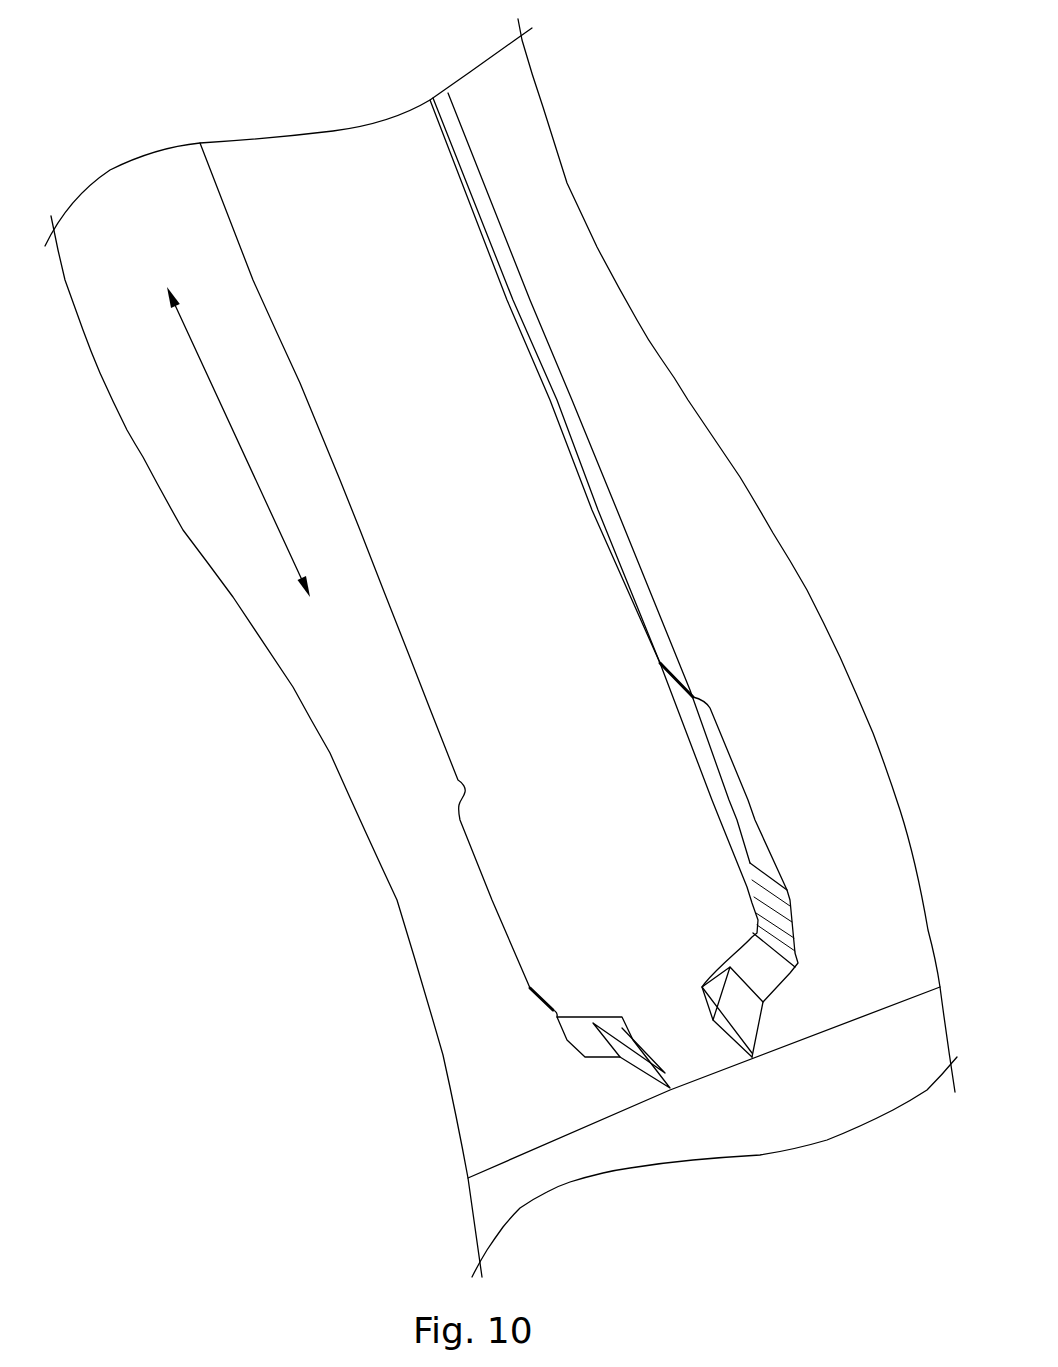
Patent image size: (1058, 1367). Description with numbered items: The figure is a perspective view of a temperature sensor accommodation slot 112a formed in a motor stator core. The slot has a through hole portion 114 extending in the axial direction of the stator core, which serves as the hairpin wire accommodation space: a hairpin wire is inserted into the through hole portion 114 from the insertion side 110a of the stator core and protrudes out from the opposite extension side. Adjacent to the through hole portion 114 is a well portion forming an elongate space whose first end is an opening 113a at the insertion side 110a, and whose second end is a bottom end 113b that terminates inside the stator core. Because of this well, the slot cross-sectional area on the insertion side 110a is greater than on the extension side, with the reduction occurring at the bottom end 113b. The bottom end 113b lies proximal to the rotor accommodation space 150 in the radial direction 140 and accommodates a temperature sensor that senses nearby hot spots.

The insertion side 110a is at (465, 1062).
The temperature sensor accommodation slot 112a is at (338, 150).
The opening of the well portion 113a is at (657, 945).
The bottom end of the well portion 113b is at (593, 1023).
The through hole portion 114 is at (528, 495).
The radial direction 140 is at (228, 422).
The rotor accommodation space 150 is at (808, 1129).